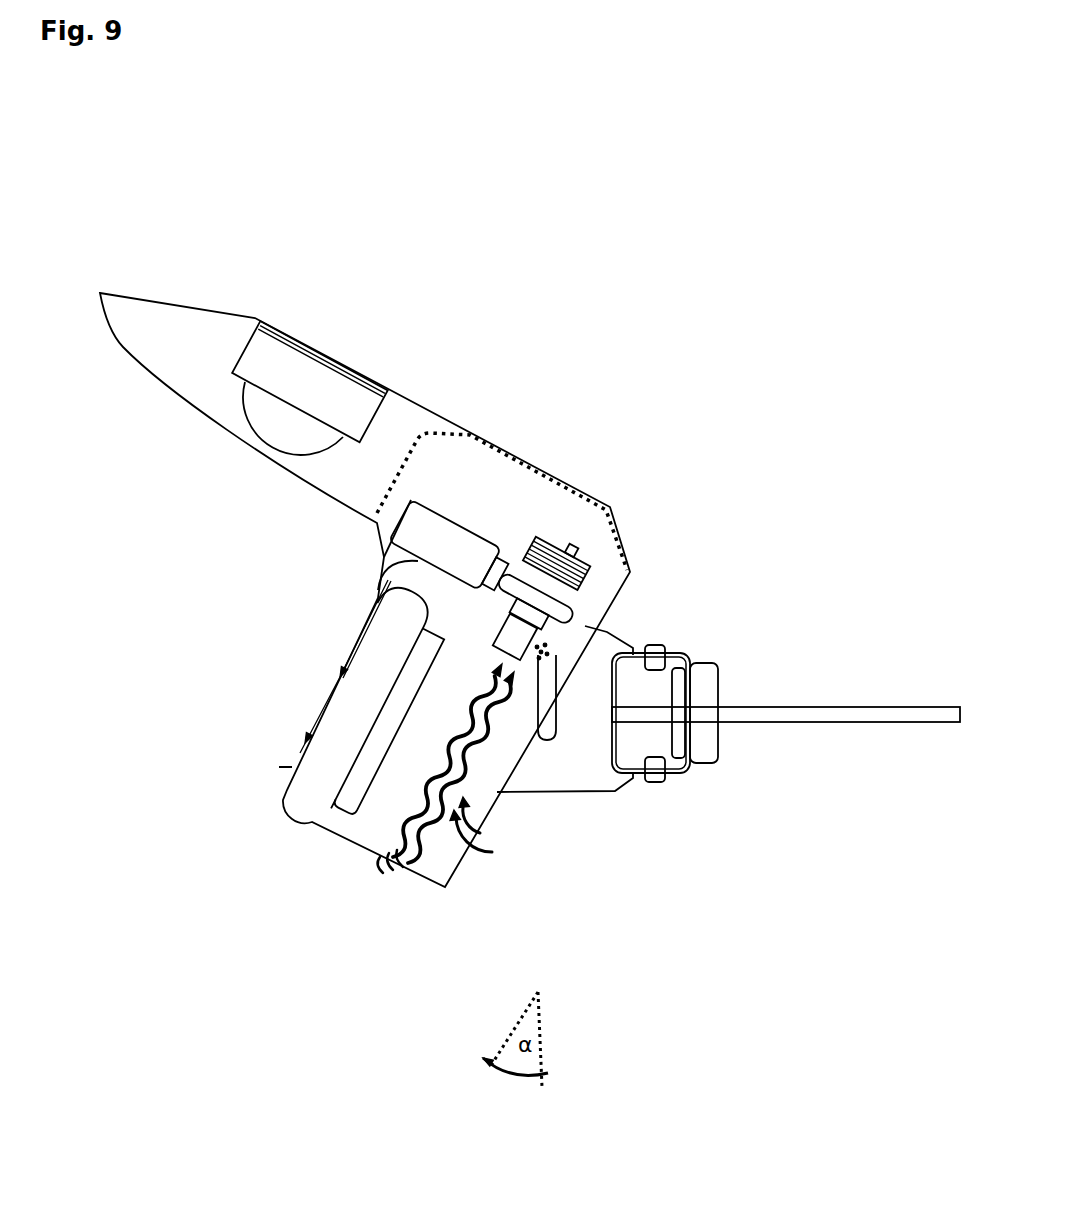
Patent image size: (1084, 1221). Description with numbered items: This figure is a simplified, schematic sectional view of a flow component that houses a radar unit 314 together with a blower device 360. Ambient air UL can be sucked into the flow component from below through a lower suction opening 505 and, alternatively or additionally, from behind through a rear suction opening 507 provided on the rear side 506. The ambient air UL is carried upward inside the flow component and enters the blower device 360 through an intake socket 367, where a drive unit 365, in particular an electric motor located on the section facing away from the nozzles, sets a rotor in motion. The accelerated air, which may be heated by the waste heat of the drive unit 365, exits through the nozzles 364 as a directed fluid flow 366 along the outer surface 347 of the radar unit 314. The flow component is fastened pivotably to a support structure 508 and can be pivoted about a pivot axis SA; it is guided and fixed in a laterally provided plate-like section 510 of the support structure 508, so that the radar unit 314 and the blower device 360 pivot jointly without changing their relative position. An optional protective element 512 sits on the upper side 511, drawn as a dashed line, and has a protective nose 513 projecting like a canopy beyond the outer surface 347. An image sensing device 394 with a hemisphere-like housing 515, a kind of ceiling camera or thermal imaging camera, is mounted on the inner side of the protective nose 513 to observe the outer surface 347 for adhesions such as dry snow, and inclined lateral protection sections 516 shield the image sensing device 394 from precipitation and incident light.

The protective element 512 is at (440, 400).
The protective nose 513 is at (204, 333).
The lateral protection sections 516 is at (235, 422).
The image sensing device 394 is at (307, 390).
The hemisphere-like housing 515 is at (272, 448).
The upper side 511 is at (543, 476).
The blower device 360 is at (370, 556).
The drive unit 365 is at (560, 593).
The intake socket 367 is at (517, 637).
The radar unit 314 is at (288, 786).
The fluid flow 366 is at (345, 648).
The nozzles 364 is at (377, 583).
The outer surface 347 is at (282, 763).
The pivot axis SA is at (545, 648).
The ambient air UL is at (378, 862).
The rear side 506 is at (510, 760).
The plate-like section 510 is at (587, 772).
The support structure 508 is at (713, 783).
The rear suction opening 507 is at (470, 860).
The lower suction opening 505 is at (418, 880).